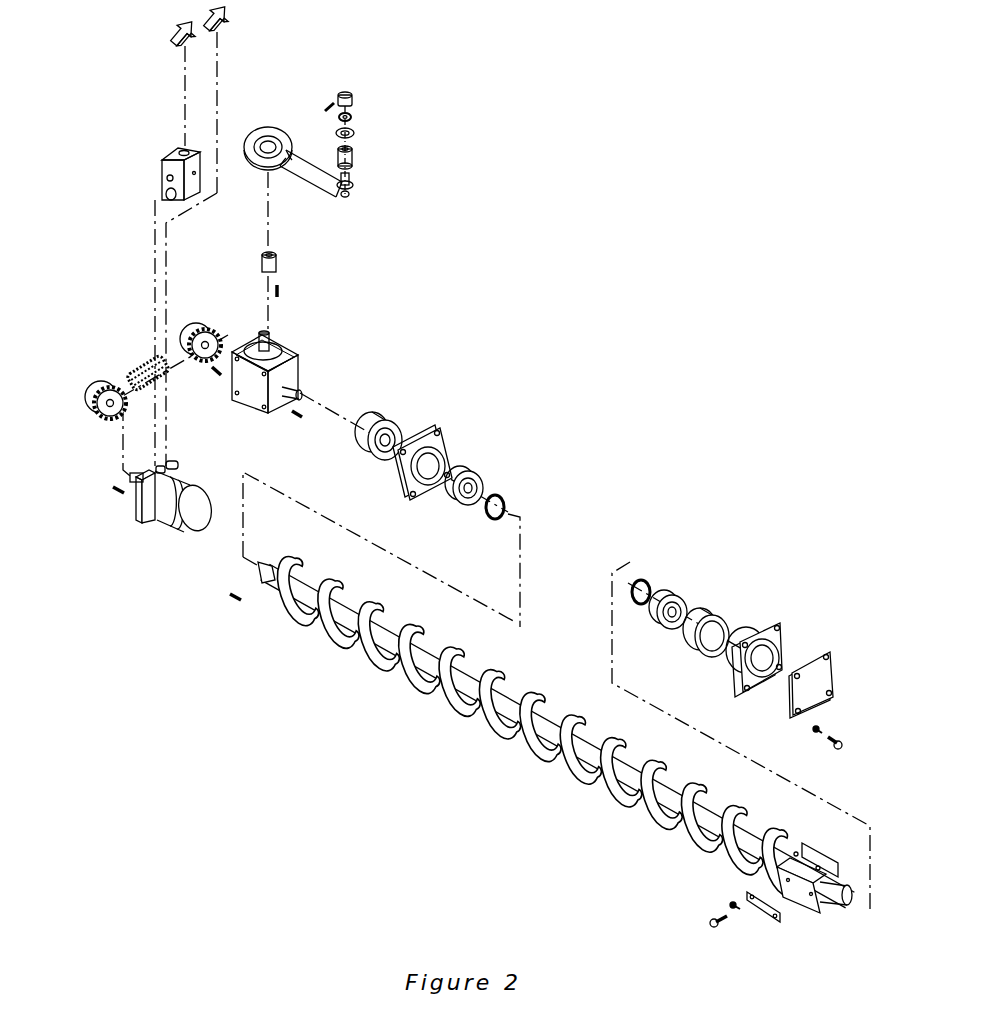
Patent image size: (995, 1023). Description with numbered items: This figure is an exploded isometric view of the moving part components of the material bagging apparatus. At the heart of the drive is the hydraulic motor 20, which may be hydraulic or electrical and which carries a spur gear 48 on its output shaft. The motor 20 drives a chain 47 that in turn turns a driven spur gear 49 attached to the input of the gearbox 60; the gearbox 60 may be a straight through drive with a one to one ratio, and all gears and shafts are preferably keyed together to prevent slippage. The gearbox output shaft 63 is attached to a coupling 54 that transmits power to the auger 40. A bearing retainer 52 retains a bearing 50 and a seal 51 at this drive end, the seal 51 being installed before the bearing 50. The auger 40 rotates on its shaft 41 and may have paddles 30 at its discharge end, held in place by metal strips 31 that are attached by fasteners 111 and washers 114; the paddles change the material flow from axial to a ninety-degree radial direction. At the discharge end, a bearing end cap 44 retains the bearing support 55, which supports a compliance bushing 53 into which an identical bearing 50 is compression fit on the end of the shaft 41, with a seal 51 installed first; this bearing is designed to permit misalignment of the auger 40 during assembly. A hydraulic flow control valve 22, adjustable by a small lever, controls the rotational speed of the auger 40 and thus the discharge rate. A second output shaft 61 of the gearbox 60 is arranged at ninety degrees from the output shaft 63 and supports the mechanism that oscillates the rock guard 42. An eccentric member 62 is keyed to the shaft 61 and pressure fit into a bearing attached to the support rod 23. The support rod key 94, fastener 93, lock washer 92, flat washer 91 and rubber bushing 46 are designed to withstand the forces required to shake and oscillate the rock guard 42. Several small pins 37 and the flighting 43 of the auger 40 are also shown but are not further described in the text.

The hydraulic motor 20 is at (180, 530).
The hydraulic flow control valve 22 is at (160, 173).
The support rod 23 is at (330, 172).
The paddles 30 is at (802, 905).
The metal strips 31 is at (760, 912).
The pin 37 is at (282, 290).
The auger 40 is at (556, 730).
The shaft 41 is at (506, 700).
The rock guard 42 is at (263, 128).
The auger flighting 43 is at (452, 703).
The bearing end cap 44 is at (826, 680).
The rubber bushing 46 is at (355, 155).
The chain 47 is at (147, 376).
The spur gear 48 is at (100, 388).
The driven spur gear 49 is at (188, 336).
The bearing 50 is at (476, 470).
The seal 51 is at (505, 494).
The bearing retainer 52 is at (442, 432).
The compliance bushing 53 is at (718, 618).
The coupling 54 is at (390, 420).
The bearing support 55 is at (782, 623).
The gearbox 60 is at (243, 345).
The second output shaft 61 is at (271, 338).
The eccentric member 62 is at (280, 262).
The output shaft 63 is at (300, 391).
The flat washer 91 is at (355, 130).
The lock washer 92 is at (352, 113).
The fastener 93 is at (356, 95).
The support rod key 94 is at (330, 100).
The fasteners 111 is at (838, 750).
The washers 114 is at (815, 732).